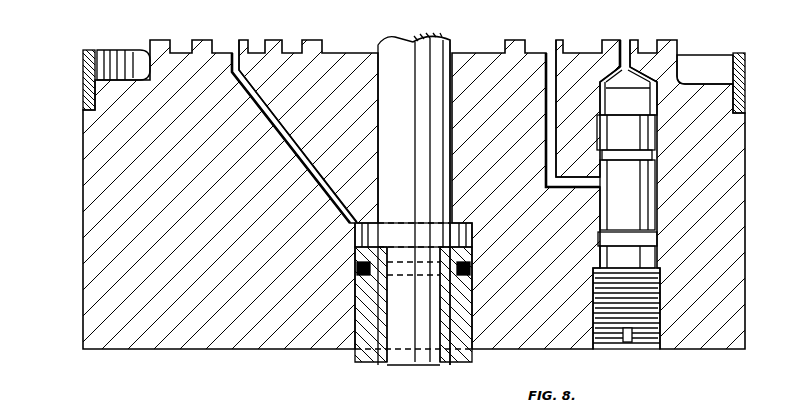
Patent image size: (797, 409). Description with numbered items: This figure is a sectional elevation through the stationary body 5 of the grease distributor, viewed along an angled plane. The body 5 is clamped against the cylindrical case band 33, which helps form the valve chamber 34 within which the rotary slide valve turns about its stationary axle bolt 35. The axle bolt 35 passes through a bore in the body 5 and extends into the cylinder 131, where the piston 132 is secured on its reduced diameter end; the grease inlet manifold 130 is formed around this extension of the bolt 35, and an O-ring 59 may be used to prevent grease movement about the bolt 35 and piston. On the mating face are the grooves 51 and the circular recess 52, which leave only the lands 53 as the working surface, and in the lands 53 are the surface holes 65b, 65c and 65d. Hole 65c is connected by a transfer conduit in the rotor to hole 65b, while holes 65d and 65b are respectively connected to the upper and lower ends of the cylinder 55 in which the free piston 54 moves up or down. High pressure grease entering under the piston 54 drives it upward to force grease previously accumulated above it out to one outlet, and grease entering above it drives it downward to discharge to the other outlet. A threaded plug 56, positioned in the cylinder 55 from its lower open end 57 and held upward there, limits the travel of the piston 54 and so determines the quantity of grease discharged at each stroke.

The stationary body part 5 is at (83, 226).
The cylindrical case band 33 is at (83, 80).
The valve chamber 34 is at (125, 58).
The stationary axle bolt 35 is at (420, 130).
The grooves 51 is at (180, 42).
The circular recess 52 is at (354, 52).
The lands 53 is at (510, 42).
The free piston 54 is at (632, 136).
The cylinder 55 is at (603, 104).
The plug 56 is at (630, 207).
The lower open end 57 is at (636, 349).
The O-ring 59 is at (470, 266).
The surface hole 65b is at (551, 50).
The surface hole 65c is at (236, 50).
The surface hole 65d is at (625, 48).
The grease inlet manifold 130 is at (462, 226).
The cylinder 131 is at (472, 296).
The piston 132 is at (470, 326).